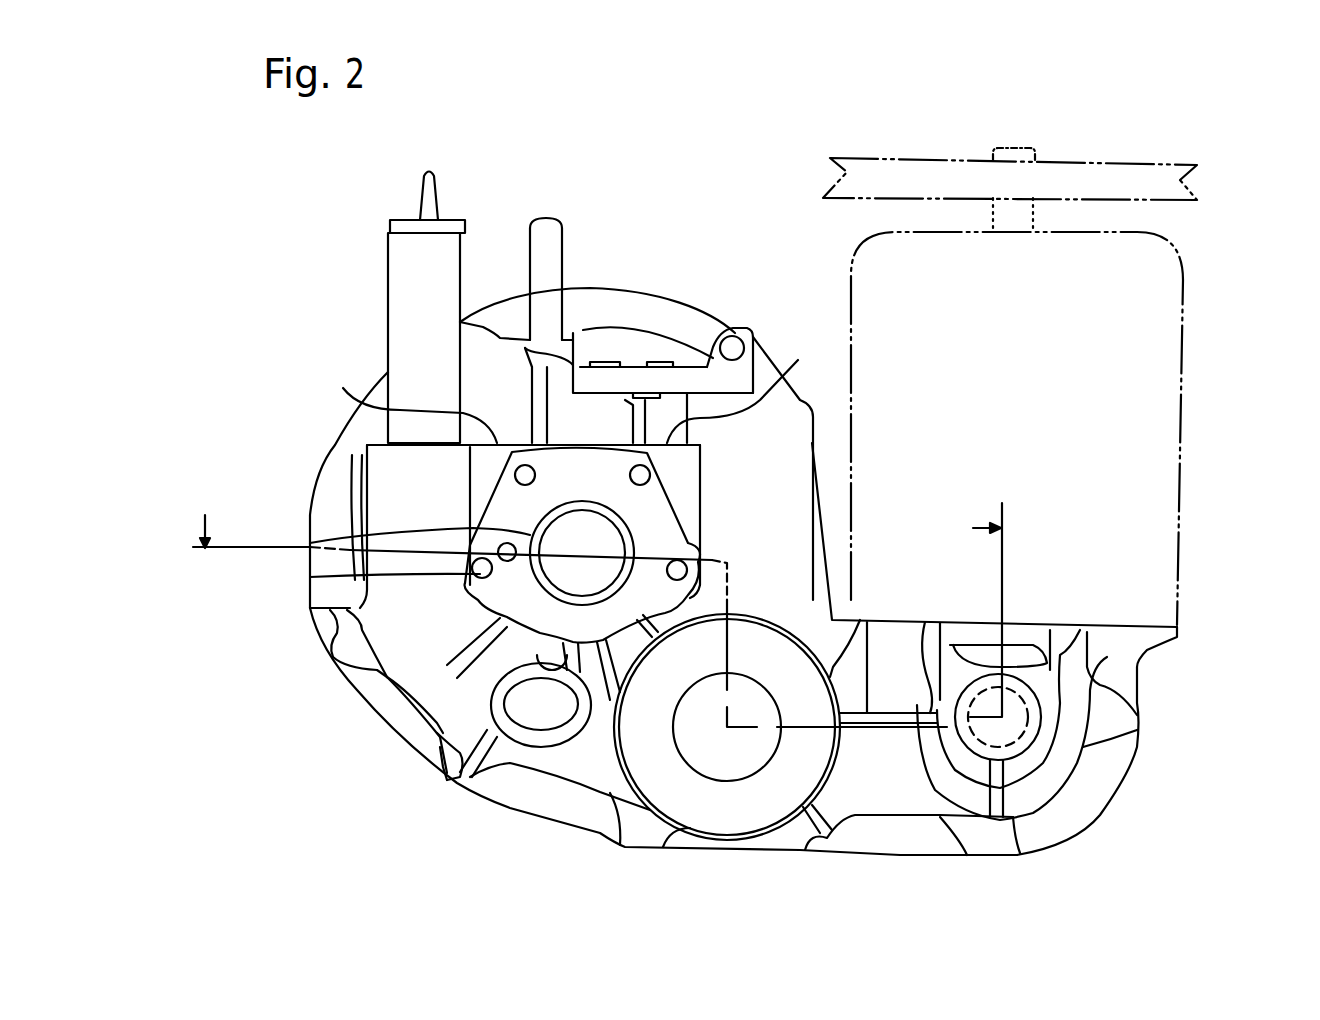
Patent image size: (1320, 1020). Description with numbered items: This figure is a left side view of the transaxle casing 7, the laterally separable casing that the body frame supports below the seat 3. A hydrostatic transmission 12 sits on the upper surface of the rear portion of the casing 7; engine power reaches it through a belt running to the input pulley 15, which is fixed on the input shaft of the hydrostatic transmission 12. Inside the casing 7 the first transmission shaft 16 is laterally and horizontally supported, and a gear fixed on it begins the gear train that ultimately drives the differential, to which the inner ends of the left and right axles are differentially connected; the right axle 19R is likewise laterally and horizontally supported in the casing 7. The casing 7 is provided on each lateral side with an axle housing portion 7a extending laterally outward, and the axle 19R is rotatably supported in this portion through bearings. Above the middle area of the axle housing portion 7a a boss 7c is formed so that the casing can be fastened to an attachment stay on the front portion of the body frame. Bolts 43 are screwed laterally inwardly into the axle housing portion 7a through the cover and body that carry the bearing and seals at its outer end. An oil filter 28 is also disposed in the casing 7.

The transaxle casing 7 is at (317, 490).
The axle housing portion 7a is at (313, 570).
The boss 7c is at (577, 391).
The right axle 19R is at (310, 545).
The bolts 43 is at (535, 474).
The oil filter 28 is at (620, 773).
The first transmission shaft 16 is at (1040, 735).
The hydrostatic transmission 12 is at (1183, 300).
The input pulley 15 is at (1197, 168).
The seat 3 is at (591, 610).